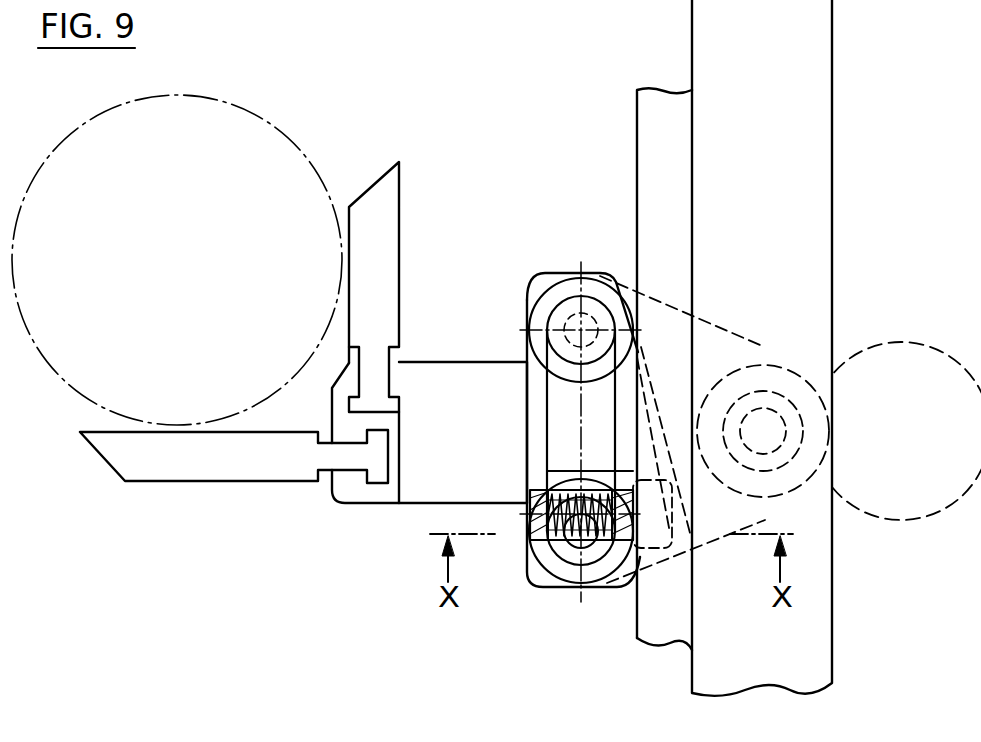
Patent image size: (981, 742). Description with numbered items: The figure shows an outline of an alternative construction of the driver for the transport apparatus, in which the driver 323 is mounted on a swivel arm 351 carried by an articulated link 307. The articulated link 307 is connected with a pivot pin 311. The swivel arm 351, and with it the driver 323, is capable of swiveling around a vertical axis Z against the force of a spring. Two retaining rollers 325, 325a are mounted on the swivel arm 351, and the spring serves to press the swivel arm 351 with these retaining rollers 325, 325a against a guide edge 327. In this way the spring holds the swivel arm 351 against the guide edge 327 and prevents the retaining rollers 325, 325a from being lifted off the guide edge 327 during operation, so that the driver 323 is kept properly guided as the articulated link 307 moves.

The articulated link 307 is at (627, 578).
The pivot pin 311 is at (757, 362).
The driver 323 is at (205, 468).
The retaining roller 325 is at (547, 572).
The retaining roller 325a is at (542, 298).
The guide edge 327 is at (637, 124).
The swivel arm 351 is at (562, 445).
The vertical axis Z is at (587, 323).